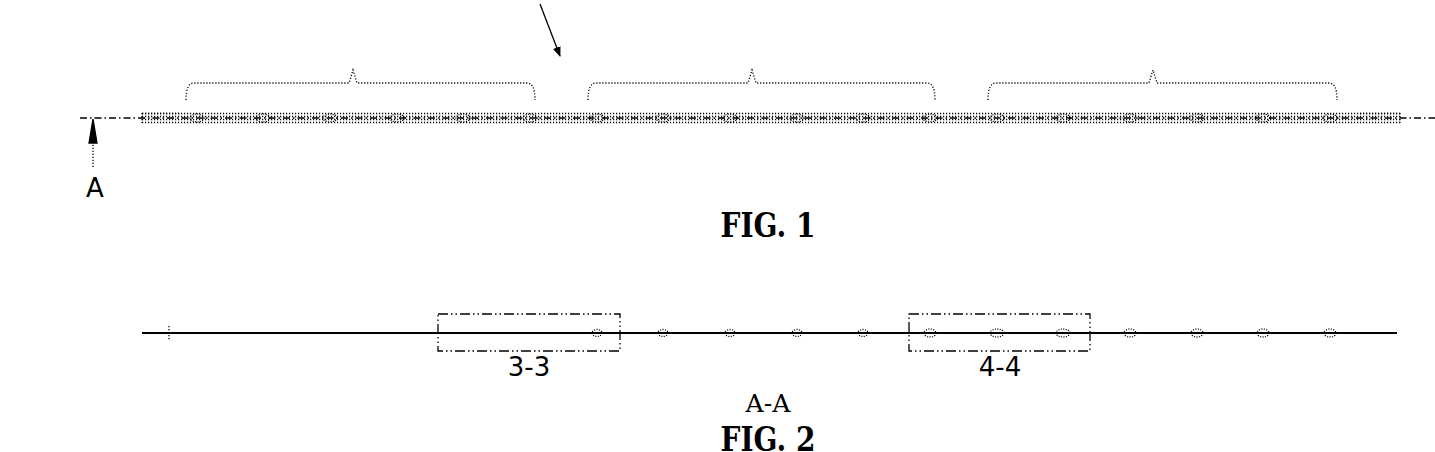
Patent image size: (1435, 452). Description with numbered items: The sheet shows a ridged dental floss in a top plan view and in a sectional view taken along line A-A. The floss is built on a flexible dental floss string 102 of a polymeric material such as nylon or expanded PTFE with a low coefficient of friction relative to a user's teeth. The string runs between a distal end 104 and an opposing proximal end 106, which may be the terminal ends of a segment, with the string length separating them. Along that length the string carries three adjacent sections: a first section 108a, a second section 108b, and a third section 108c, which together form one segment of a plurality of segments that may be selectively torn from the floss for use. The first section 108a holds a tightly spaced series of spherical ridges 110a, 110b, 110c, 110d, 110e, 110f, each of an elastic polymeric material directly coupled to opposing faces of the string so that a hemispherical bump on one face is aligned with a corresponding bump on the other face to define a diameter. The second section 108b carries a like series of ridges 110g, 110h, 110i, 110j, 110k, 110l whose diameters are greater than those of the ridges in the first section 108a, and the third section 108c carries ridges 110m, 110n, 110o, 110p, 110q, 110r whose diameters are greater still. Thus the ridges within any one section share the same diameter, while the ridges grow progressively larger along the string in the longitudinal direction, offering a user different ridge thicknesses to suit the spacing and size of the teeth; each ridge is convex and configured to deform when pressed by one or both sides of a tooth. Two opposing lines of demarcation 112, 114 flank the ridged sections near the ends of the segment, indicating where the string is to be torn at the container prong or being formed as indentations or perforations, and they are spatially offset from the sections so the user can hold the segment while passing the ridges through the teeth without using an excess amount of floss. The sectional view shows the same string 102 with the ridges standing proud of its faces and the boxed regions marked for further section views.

The dental floss string 102 is at (283, 122).
The distal end 104 is at (1361, 130).
The proximal end 106 is at (174, 128).
The first section 108a is at (360, 66).
The second section 108b is at (761, 65).
The third section 108c is at (1162, 65).
The spherical ridge 110a is at (195, 125).
The spherical ridge 110b is at (258, 125).
The spherical ridge 110c is at (328, 125).
The spherical ridge 110d is at (391, 125).
The spherical ridge 110e is at (464, 125).
The spherical ridge 110f is at (528, 125).
The spherical ridge 110g is at (594, 125).
The spherical ridge 110h is at (660, 125).
The spherical ridge 110i is at (725, 125).
The spherical ridge 110j is at (790, 125).
The spherical ridge 110k is at (855, 125).
The spherical ridge 110l is at (932, 125).
The spherical ridge 110m is at (993, 125).
The spherical ridge 110n is at (1058, 125).
The spherical ridge 110o is at (1125, 125).
The spherical ridge 110p is at (1193, 125).
The spherical ridge 110q is at (1257, 125).
The spherical ridge 110r is at (1335, 125).
The line of demarcation 112 is at (180, 119).
The line of demarcation 114 is at (1365, 118).